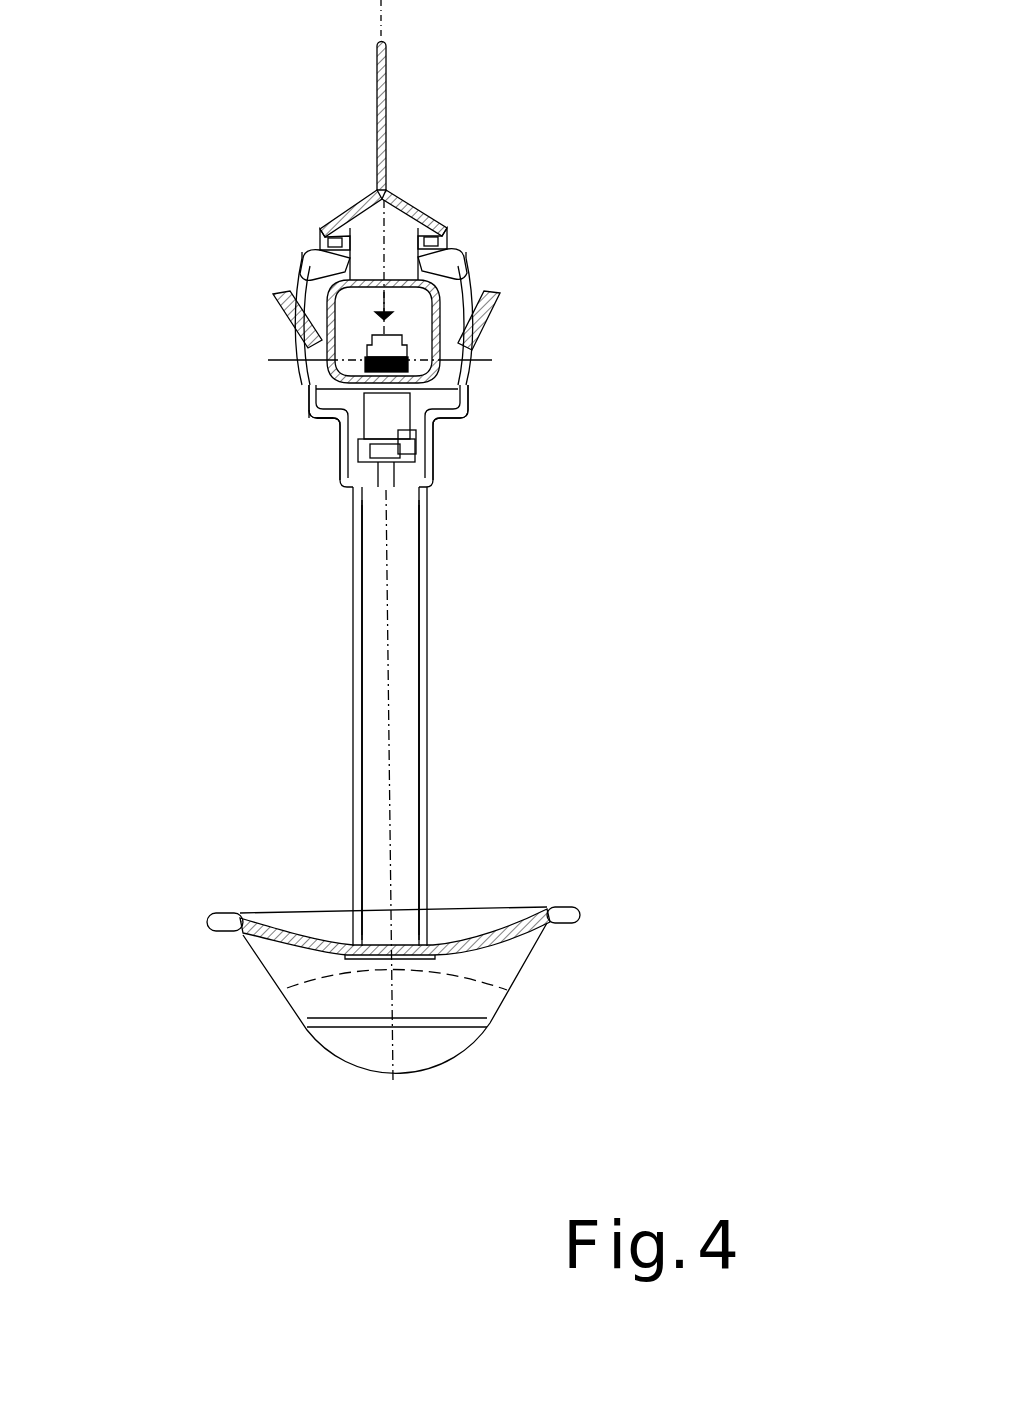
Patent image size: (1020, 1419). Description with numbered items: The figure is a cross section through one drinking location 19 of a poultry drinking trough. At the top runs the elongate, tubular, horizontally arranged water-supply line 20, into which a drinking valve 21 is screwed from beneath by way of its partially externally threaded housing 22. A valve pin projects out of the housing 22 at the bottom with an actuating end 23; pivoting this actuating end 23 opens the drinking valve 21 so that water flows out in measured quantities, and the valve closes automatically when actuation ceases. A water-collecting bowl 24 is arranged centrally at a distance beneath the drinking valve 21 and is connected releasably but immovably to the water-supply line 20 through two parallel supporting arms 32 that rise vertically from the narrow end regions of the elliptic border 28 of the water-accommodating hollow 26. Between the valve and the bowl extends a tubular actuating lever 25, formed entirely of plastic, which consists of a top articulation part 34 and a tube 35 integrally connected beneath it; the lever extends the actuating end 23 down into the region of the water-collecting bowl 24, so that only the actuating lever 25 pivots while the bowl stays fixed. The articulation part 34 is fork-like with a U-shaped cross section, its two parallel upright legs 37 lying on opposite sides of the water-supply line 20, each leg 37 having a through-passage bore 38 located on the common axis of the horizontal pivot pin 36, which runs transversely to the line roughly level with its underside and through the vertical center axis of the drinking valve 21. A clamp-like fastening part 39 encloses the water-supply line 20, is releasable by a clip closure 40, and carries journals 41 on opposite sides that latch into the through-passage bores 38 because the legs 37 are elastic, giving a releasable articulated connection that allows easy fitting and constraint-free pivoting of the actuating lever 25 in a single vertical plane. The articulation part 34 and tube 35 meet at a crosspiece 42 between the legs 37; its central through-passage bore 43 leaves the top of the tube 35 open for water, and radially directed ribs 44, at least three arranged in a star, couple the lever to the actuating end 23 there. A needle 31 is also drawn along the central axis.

The drinking location 19 is at (608, 364).
The water-supply line 20 is at (461, 278).
The drinking valve 21 is at (358, 446).
The housing 22 is at (398, 432).
The actuating end 23 is at (366, 487).
The water-collecting bowl 24 is at (557, 850).
The tubular actuating lever 25 is at (402, 702).
The water-accommodating hollow 26 is at (473, 1000).
The elliptic border 28 is at (295, 910).
The needle 31 is at (398, 225).
The supporting arm 32 is at (427, 593).
The articulation part 34 is at (470, 386).
The tube 35 is at (427, 670).
The pivot pin 36 is at (470, 365).
The leg 37 is at (500, 318).
The through-passage bore 38 is at (290, 380).
The fastening part 39 is at (303, 298).
The clip closure 40 is at (310, 250).
The journal 41 is at (290, 380).
The crosspiece 42 is at (340, 446).
The central through-passage bore 43 is at (352, 466).
The rib 44 is at (356, 470).